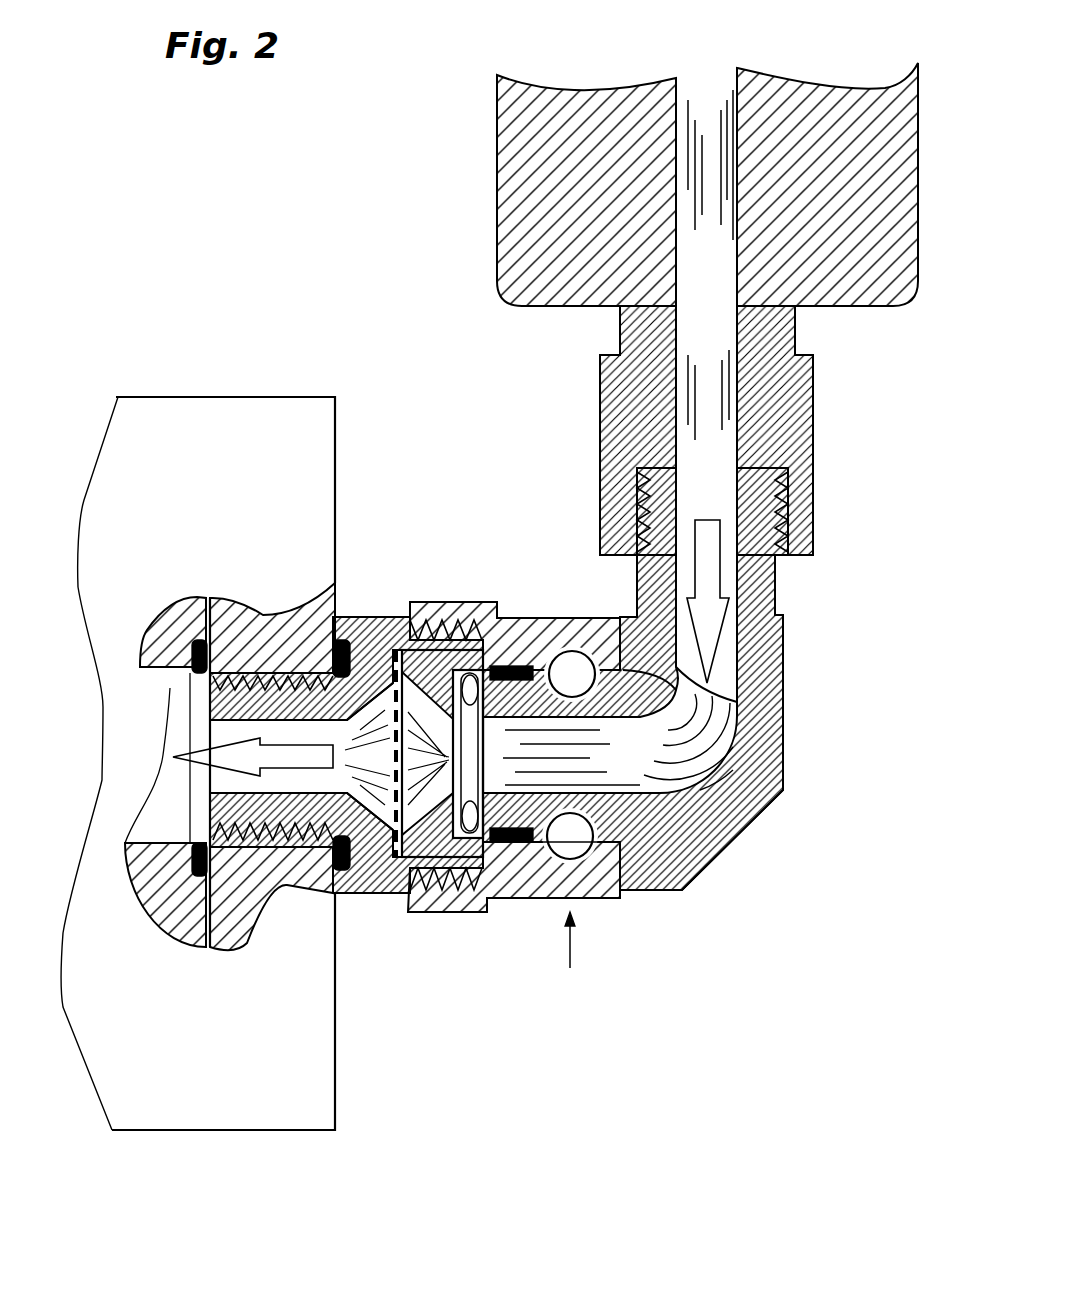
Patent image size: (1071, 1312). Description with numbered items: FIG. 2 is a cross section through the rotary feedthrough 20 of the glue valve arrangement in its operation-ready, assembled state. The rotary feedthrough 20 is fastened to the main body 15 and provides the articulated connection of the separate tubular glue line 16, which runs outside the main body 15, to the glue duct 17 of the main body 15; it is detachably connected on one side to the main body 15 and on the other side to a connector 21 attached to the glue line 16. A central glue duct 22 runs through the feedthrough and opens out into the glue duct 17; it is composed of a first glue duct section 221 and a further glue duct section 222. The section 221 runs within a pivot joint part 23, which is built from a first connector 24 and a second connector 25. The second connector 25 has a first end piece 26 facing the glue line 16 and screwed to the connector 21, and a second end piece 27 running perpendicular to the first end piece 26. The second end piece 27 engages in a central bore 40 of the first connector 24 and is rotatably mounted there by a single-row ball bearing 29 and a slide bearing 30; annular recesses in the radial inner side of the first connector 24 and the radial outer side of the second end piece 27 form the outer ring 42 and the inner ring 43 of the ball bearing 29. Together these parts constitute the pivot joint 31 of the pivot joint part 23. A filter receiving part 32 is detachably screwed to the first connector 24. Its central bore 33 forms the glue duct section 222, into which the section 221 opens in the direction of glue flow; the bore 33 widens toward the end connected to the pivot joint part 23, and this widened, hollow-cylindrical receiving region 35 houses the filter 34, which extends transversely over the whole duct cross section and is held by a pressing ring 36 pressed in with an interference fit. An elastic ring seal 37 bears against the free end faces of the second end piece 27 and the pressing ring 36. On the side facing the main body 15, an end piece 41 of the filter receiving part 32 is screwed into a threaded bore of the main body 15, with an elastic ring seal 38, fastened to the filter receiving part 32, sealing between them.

The main body 15 is at (192, 455).
The tubular glue line 16 is at (550, 183).
The glue duct 17 is at (170, 688).
The rotary feedthrough 20 is at (815, 808).
The connector 21 is at (775, 405).
The central glue duct 22 is at (687, 753).
The glue duct section 221 is at (754, 813).
The glue duct section 222 is at (360, 895).
The pivot joint part 23 is at (569, 953).
The first connector 24 is at (480, 900).
The second connector 25 is at (732, 840).
The first end piece 26 is at (773, 577).
The second end piece 27 is at (541, 688).
The single-row ball bearing 29 is at (578, 652).
The slide bearing 30 is at (535, 660).
The pivot joint 31 is at (525, 855).
The filter receiving part 32 is at (367, 625).
The central bore 33 is at (318, 775).
The filter 34 is at (398, 655).
The receiving region 35 is at (395, 885).
The pressing ring 36 is at (428, 670).
The seal 37 is at (712, 700).
The seal 38 is at (287, 617).
The central bore 40 is at (737, 677).
The end piece 41 is at (224, 948).
The outer ring 42 is at (582, 852).
The inner ring 43 is at (590, 700).